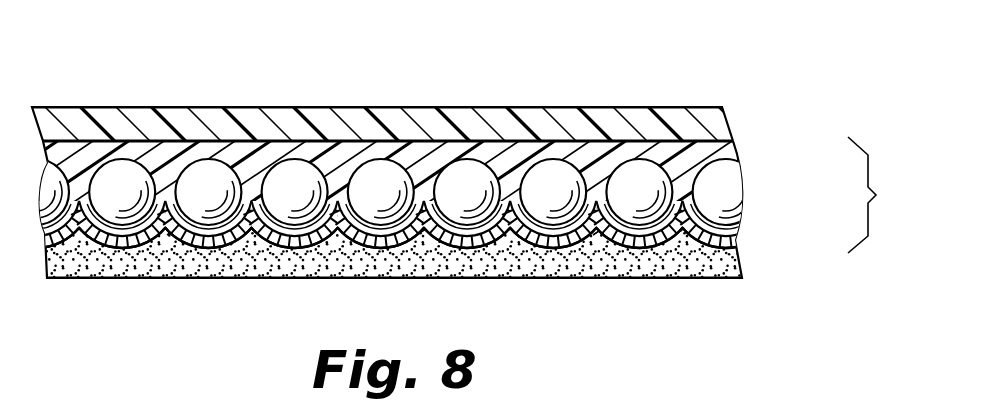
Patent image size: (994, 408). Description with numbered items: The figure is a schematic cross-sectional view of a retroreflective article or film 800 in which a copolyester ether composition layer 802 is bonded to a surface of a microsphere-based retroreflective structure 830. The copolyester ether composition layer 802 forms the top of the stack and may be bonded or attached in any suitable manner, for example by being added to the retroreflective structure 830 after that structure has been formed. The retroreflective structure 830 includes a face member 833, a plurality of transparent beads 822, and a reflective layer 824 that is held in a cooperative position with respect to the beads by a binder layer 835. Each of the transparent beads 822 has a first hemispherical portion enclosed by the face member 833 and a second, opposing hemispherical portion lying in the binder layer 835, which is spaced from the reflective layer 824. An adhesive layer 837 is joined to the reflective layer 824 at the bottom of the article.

The retroreflective article 800 is at (702, 67).
The copolyester ether composition layer 802 is at (283, 122).
The transparent beads 822 is at (388, 203).
The face member 833 is at (384, 188).
The binder layer 835 is at (733, 239).
The reflective layer 824 is at (384, 238).
The microsphere-based retroreflective structure 830 is at (891, 195).
The adhesive layer 837 is at (390, 239).